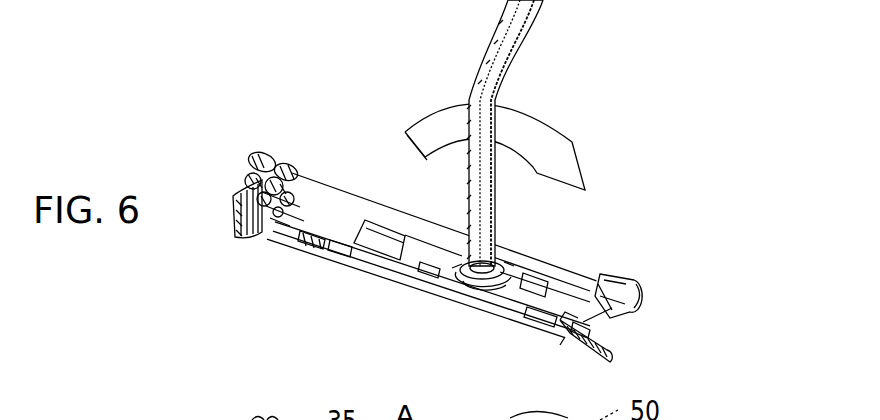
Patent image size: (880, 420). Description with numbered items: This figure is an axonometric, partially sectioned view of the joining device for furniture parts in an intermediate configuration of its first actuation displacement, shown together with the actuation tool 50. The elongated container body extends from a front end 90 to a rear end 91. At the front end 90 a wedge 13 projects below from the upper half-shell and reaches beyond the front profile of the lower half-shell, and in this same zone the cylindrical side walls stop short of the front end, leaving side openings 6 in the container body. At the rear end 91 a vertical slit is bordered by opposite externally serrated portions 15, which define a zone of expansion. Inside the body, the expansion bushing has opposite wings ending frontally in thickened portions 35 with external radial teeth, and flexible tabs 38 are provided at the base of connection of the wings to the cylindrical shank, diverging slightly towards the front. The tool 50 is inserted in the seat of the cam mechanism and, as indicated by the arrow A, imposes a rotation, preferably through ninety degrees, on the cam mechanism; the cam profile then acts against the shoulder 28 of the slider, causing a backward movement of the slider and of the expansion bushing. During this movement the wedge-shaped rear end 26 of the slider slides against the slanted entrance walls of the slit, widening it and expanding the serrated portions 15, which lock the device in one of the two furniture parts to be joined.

The side openings 6 is at (368, 268).
The wedge 13 is at (243, 177).
The externally serrated portions 15 is at (615, 270).
The rear end of the slider 26 is at (617, 333).
The shoulder 28 is at (497, 290).
The thickened portions 35 is at (262, 158).
The flexible tabs 38 is at (305, 248).
The tool 50 is at (497, 70).
The front end 90 is at (217, 180).
The rear end 91 is at (650, 320).
The arrow A is at (518, 130).